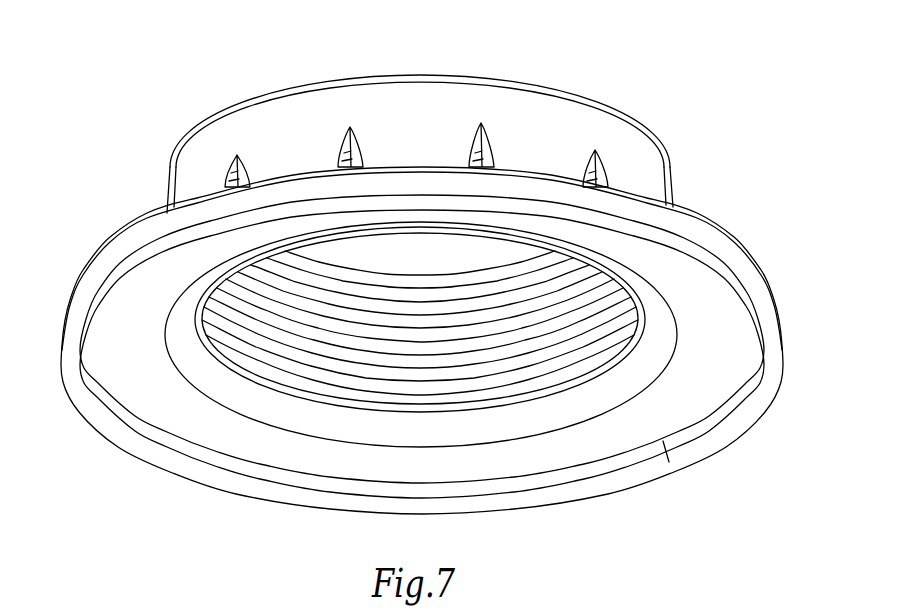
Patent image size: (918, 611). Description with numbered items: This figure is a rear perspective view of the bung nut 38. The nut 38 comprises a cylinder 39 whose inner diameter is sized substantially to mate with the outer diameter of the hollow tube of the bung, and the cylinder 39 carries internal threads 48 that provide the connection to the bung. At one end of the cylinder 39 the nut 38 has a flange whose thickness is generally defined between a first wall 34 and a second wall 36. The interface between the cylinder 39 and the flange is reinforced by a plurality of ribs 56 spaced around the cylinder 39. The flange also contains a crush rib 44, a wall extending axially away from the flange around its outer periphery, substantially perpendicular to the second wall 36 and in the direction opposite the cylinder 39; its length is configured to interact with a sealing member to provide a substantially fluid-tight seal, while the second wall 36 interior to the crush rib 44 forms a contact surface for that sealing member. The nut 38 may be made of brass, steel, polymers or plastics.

The bung nut 38 is at (187, 53).
The cylinder 39 is at (567, 123).
The ribs 56 is at (607, 180).
The first wall 34 is at (130, 231).
The crush rib 44 is at (93, 277).
The second wall 36 is at (725, 338).
The internal threads 48 is at (237, 328).